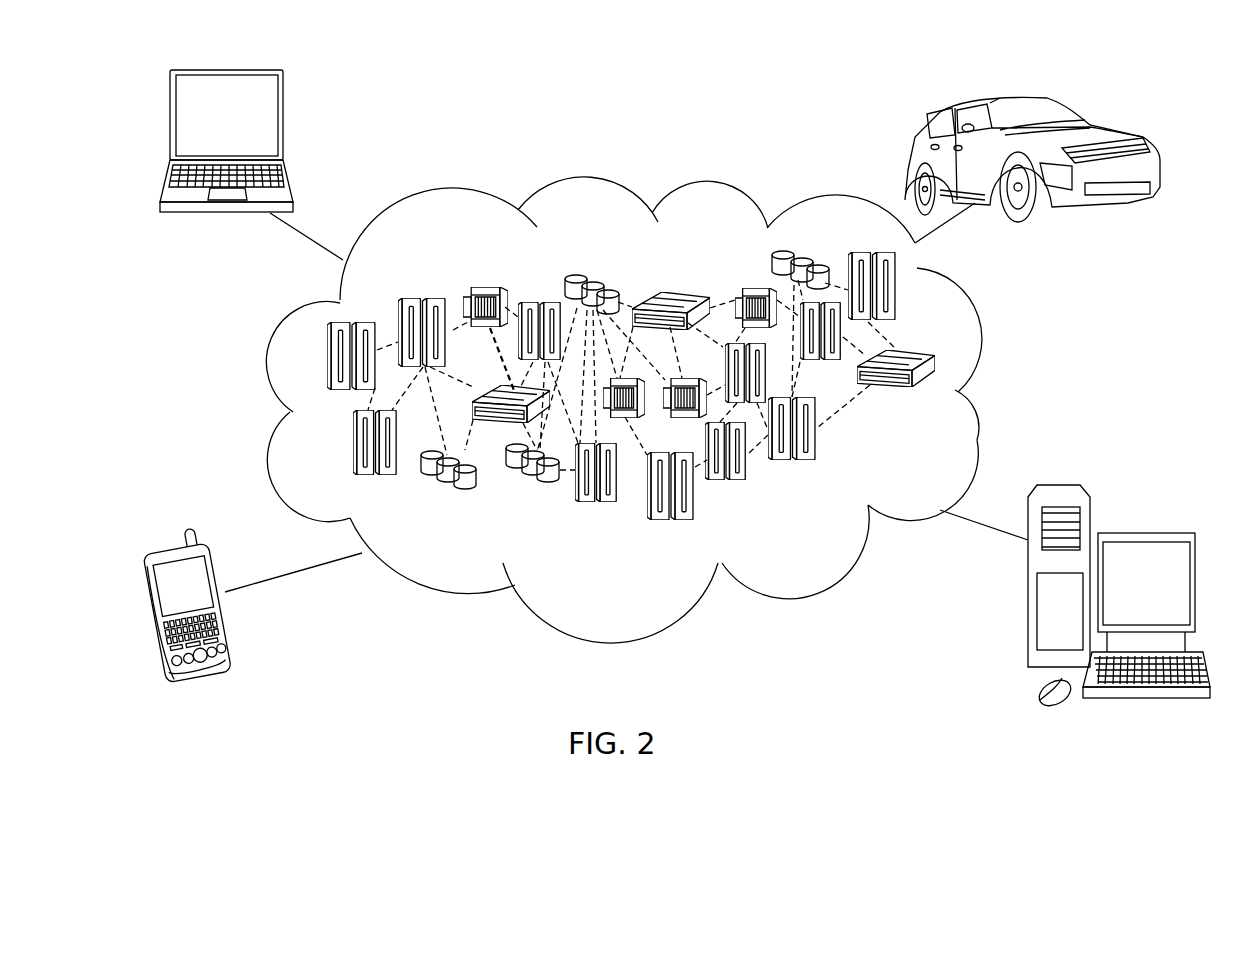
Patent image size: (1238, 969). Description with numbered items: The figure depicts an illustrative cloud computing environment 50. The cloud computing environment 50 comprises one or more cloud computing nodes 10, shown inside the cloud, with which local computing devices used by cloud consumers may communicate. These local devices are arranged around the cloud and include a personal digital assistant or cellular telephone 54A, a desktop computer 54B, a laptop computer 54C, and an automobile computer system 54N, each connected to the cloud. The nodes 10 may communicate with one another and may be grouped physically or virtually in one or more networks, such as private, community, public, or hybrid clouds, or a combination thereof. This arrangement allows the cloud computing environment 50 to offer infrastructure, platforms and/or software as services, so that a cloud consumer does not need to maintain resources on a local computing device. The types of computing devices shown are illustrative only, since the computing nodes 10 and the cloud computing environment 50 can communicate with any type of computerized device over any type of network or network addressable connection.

The cloud computing node 10 is at (962, 412).
The cloud computing environment 50 is at (978, 333).
The personal digital assistant or cellular telephone 54A is at (150, 616).
The desktop computer 54B is at (1140, 534).
The laptop computer 54C is at (168, 122).
The automobile computer system 54N is at (1080, 116).